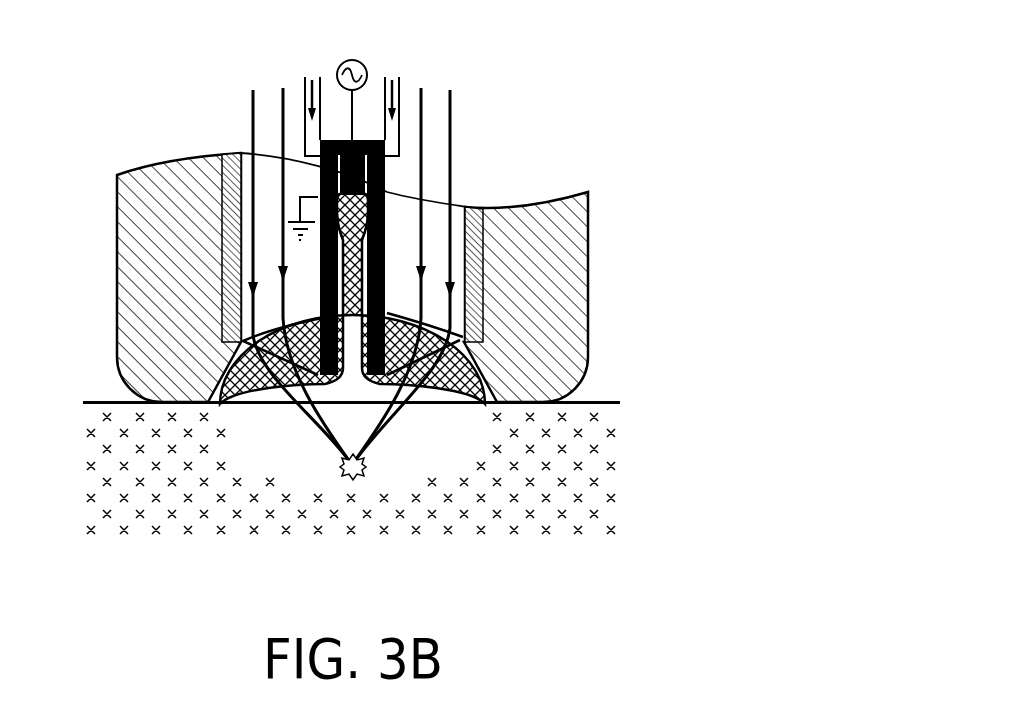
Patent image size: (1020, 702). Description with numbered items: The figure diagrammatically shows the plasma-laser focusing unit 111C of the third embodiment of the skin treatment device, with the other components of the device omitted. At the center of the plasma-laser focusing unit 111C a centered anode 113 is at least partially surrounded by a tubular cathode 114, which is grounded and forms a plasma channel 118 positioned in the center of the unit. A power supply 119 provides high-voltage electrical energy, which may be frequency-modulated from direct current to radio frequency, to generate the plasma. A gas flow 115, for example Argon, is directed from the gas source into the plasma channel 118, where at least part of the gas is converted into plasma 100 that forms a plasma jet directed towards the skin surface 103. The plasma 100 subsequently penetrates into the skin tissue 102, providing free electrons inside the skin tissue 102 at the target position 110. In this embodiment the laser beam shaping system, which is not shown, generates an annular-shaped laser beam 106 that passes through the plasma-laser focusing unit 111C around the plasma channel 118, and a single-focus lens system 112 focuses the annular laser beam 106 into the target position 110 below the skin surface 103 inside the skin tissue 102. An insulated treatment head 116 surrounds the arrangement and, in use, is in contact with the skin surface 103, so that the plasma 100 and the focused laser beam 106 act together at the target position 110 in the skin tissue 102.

The plasma 100 is at (403, 470).
The skin tissue 102 is at (603, 470).
The skin surface 103 is at (620, 403).
The laser beam 106 is at (253, 110).
The target position 110 is at (340, 468).
The plasma-laser focusing unit 111C is at (735, 99).
The single-focus lens system 112 is at (387, 317).
The anode 113 is at (386, 147).
The tubular cathode 114 is at (387, 243).
The gas flow 115 is at (305, 77).
The insulated treatment head 116 is at (580, 223).
The plasma channel 118 is at (373, 208).
The power supply 119 is at (367, 73).